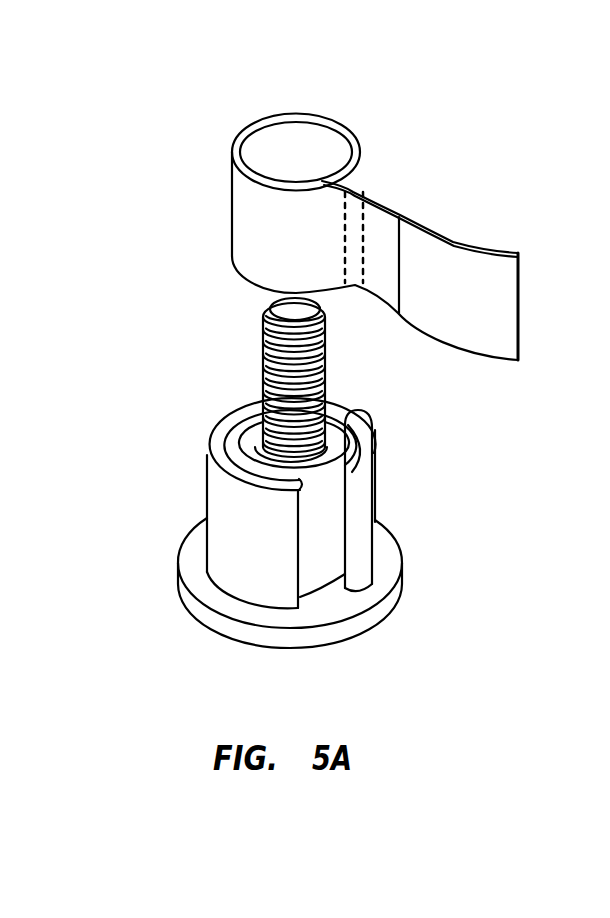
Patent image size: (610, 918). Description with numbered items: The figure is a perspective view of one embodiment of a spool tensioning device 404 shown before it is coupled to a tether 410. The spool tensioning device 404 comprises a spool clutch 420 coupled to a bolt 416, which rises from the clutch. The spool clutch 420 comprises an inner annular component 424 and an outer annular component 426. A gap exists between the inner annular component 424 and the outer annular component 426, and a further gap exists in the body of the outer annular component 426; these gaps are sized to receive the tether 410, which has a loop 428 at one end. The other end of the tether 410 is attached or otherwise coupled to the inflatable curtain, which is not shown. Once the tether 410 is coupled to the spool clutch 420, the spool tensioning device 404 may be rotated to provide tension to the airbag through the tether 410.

The spool tensioning device 404 is at (197, 489).
The tether 410 is at (445, 268).
The bolt 416 is at (280, 305).
The spool clutch 420 is at (372, 575).
The inner annular component 424 is at (335, 442).
The outer annular component 426 is at (367, 442).
The loop 428 is at (267, 140).